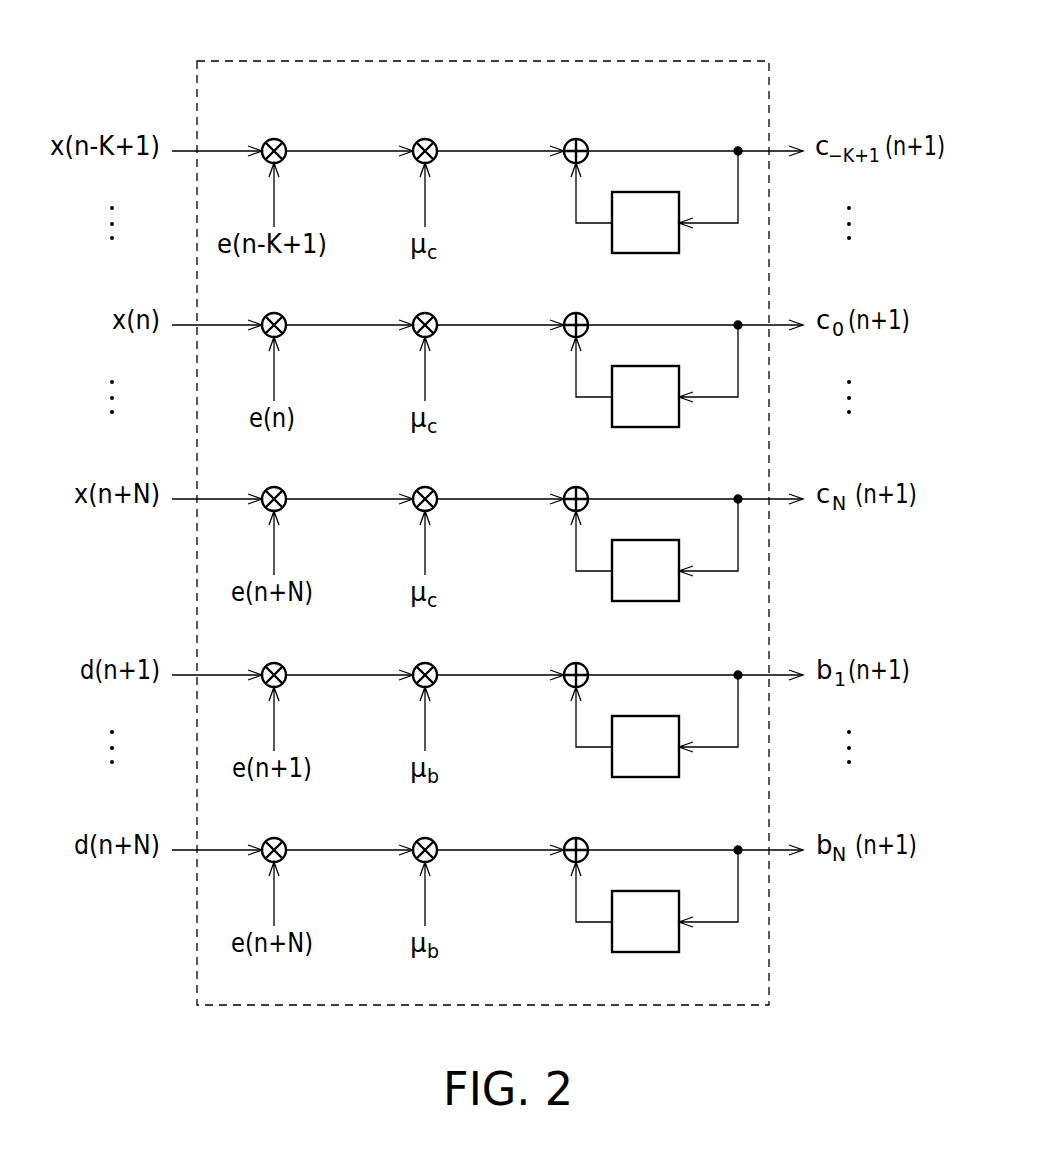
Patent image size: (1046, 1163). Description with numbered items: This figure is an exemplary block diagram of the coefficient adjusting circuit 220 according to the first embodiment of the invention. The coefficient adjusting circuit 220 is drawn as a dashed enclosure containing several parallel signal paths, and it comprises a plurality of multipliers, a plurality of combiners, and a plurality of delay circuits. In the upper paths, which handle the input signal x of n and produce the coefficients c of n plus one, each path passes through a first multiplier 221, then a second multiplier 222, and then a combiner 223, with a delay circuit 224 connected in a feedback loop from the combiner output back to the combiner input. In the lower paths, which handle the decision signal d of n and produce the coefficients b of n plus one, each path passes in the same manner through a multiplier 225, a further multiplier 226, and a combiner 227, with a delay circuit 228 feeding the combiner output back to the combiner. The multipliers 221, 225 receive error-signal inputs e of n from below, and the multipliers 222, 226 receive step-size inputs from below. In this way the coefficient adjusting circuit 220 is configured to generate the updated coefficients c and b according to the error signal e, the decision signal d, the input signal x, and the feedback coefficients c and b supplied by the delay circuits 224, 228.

The coefficient adjusting circuit 220 is at (418, 61).
The multiplier 221 is at (266, 165).
The multiplier 222 is at (417, 165).
The combiner 223 is at (567, 166).
The delay circuit 224 is at (644, 192).
The multiplier 225 is at (266, 689).
The multiplier 226 is at (417, 689).
The combiner 227 is at (567, 690).
The delay circuit 228 is at (644, 716).